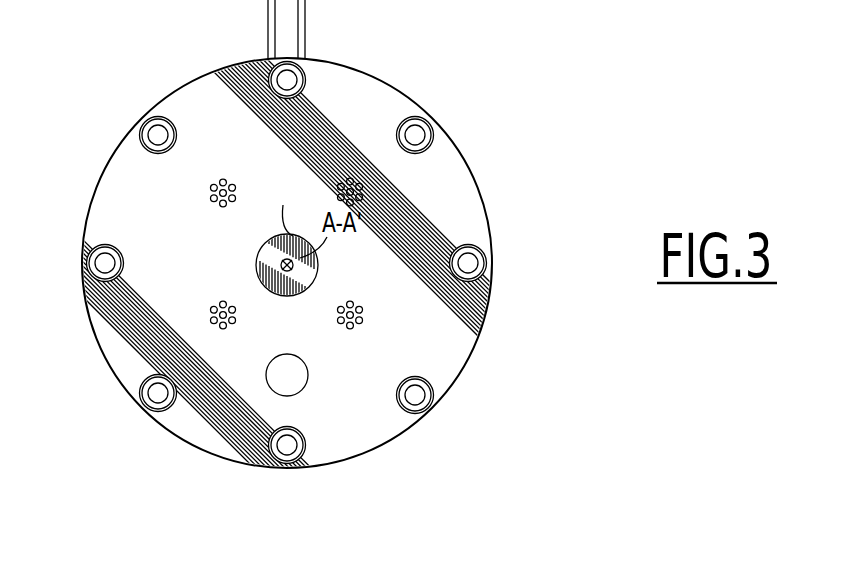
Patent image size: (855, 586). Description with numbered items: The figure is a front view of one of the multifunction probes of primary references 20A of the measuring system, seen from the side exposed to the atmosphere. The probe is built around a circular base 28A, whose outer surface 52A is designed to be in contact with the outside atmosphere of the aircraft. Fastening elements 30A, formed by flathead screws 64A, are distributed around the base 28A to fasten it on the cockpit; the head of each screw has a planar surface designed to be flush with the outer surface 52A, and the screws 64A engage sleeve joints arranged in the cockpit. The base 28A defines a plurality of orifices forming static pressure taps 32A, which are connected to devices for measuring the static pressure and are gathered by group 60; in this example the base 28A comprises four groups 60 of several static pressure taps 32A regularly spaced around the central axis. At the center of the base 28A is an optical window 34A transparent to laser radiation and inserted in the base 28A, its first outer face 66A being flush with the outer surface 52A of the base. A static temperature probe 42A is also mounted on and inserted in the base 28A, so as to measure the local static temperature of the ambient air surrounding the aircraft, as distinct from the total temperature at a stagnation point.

The multifunction probe of primary references 20A is at (150, 444).
The base 28A is at (402, 91).
The fastening elements 30A is at (152, 130).
The static pressure taps 32A is at (349, 328).
The optical window 34A is at (282, 264).
The static temperature probe 42A is at (281, 382).
The outer surface 52A is at (432, 180).
The group 60 is at (186, 315).
The flathead screws 64A is at (298, 273).
The first outer face 66A is at (283, 204).